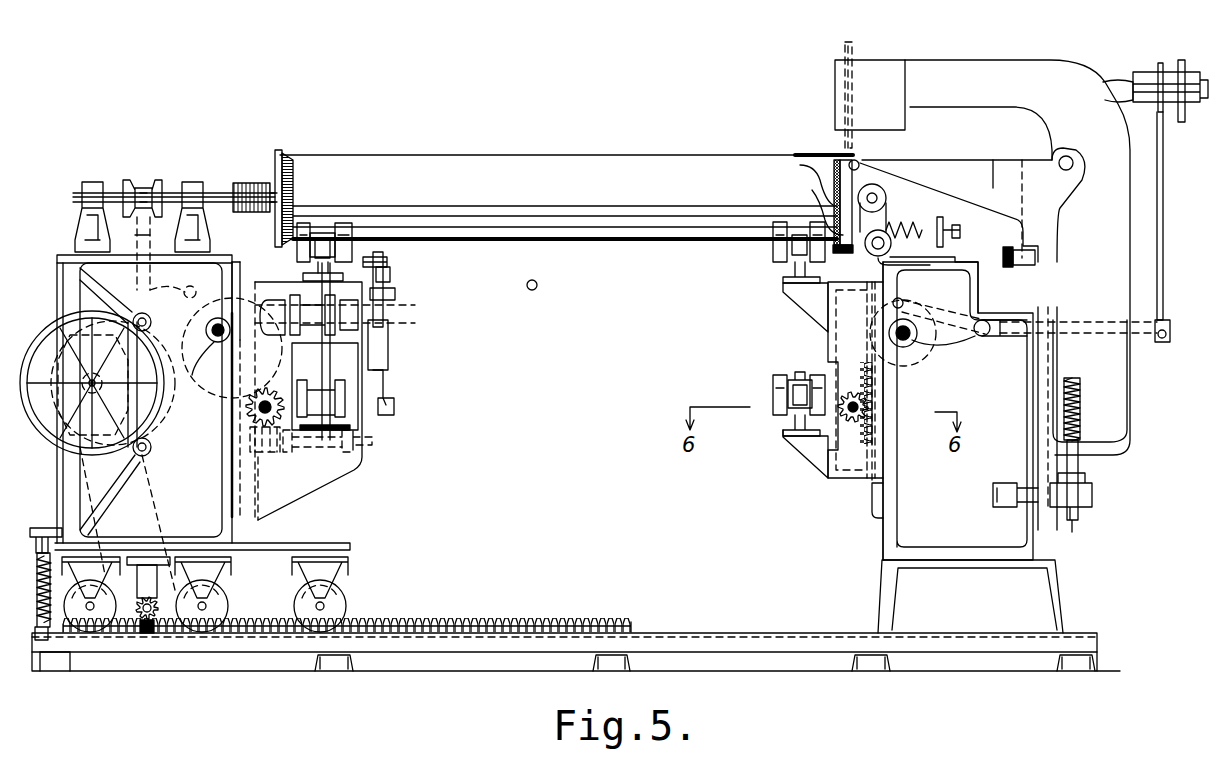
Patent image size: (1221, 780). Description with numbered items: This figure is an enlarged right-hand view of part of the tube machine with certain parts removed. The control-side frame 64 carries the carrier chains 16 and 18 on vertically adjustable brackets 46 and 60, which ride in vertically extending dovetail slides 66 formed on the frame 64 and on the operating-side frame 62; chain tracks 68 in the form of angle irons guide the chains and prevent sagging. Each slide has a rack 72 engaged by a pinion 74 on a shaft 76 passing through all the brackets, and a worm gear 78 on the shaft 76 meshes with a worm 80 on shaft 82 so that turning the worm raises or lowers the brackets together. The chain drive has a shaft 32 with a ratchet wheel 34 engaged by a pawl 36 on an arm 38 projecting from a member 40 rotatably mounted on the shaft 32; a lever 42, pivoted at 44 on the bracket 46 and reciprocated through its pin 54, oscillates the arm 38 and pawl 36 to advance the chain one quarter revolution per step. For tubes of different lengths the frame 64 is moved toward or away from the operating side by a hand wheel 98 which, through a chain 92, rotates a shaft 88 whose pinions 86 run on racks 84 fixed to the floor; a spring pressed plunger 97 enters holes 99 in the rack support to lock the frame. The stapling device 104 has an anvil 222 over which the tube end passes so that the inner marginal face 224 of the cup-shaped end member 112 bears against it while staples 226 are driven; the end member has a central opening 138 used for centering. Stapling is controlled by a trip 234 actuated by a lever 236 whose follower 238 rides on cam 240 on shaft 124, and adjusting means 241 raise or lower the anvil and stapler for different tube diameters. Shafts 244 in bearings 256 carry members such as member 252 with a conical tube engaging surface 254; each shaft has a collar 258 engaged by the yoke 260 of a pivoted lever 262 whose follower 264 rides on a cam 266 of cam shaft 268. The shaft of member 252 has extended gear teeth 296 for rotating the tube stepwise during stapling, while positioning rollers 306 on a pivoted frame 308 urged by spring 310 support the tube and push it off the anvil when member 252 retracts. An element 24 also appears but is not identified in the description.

The carrier chain 16 is at (793, 373).
The carrier chain 18 is at (323, 233).
The guide rollers 24 is at (346, 233).
The shaft 32 is at (395, 318).
The ratchet wheel 34 is at (386, 297).
The pawl 36 is at (388, 270).
The arm 38 is at (392, 280).
The member 40 is at (395, 324).
The lever 42 is at (380, 352).
The pivot 44 is at (385, 373).
The vertically movable bracket 46 is at (406, 486).
The pin 54 is at (394, 406).
The bracket 60 is at (845, 455).
The frame 62 is at (920, 522).
The frame 64 is at (236, 528).
The dovetail slides 66 is at (240, 292).
The chain tracks 68 is at (790, 272).
The rack 72 is at (860, 378).
The pinion 74 is at (286, 392).
The shaft 76 is at (258, 412).
The worm gear 78 is at (242, 408).
The worm 80 is at (274, 456).
The shaft 82 is at (312, 456).
The rack 84 is at (524, 620).
The pinion 86 is at (145, 620).
The shaft 88 is at (160, 622).
The chain 92 is at (150, 490).
The spring pressed plunger 97 is at (47, 528).
The hand wheel 98 is at (48, 328).
The holes 99 is at (62, 642).
The stapling device 104 is at (933, 50).
The end member 112 is at (830, 154).
The shaft 124 is at (916, 340).
The opening 138 is at (818, 185).
The anvil 222 is at (866, 165).
The inner marginal face 224 is at (858, 152).
The staples 226 is at (822, 208).
The trip 234 is at (1163, 212).
The lever 236 is at (1160, 345).
The follower 238 is at (905, 298).
The cam 240 is at (922, 352).
The adjusting means 241 is at (1092, 464).
The shaft 244 is at (166, 192).
The member 252 is at (285, 150).
The conical tube engaging surface 254 is at (296, 170).
The bearings 256 is at (92, 190).
The collar 258 is at (130, 180).
The yoke 260 is at (148, 218).
The pivoted lever 262 is at (136, 248).
The follower 264 is at (186, 290).
The cam 266 is at (226, 264).
The cam shaft 268 is at (229, 348).
The extended gear teeth 296 is at (252, 183).
The positioning rollers 306 is at (885, 192).
The frame 308 is at (880, 212).
The spring 310 is at (944, 245).